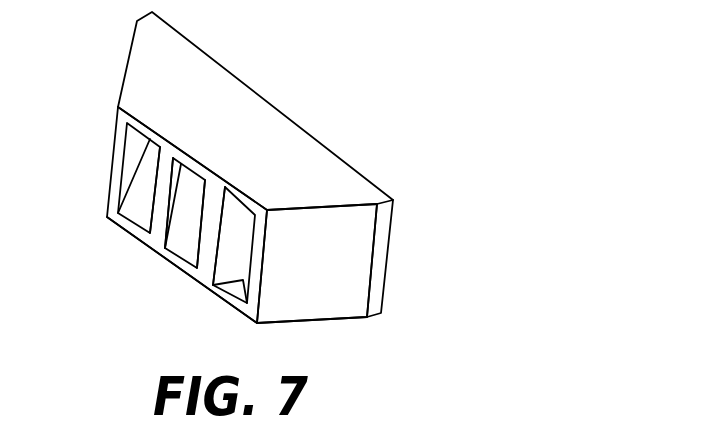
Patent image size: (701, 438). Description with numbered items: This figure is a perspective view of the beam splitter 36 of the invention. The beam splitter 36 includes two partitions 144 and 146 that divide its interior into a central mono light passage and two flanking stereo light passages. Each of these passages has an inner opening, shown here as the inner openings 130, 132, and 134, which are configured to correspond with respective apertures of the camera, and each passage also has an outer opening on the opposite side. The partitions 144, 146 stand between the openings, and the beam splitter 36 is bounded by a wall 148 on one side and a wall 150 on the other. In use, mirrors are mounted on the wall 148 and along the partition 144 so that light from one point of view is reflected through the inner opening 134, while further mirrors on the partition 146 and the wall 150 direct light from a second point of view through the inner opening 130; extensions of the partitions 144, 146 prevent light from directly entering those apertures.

The beam splitter 36 is at (336, 100).
The wall 148 is at (119, 121).
The inner opening 130 is at (213, 295).
The inner opening 134 is at (134, 208).
The inner opening 132 is at (183, 240).
The partition 144 is at (162, 192).
The partition 146 is at (205, 218).
The wall 150 is at (265, 229).